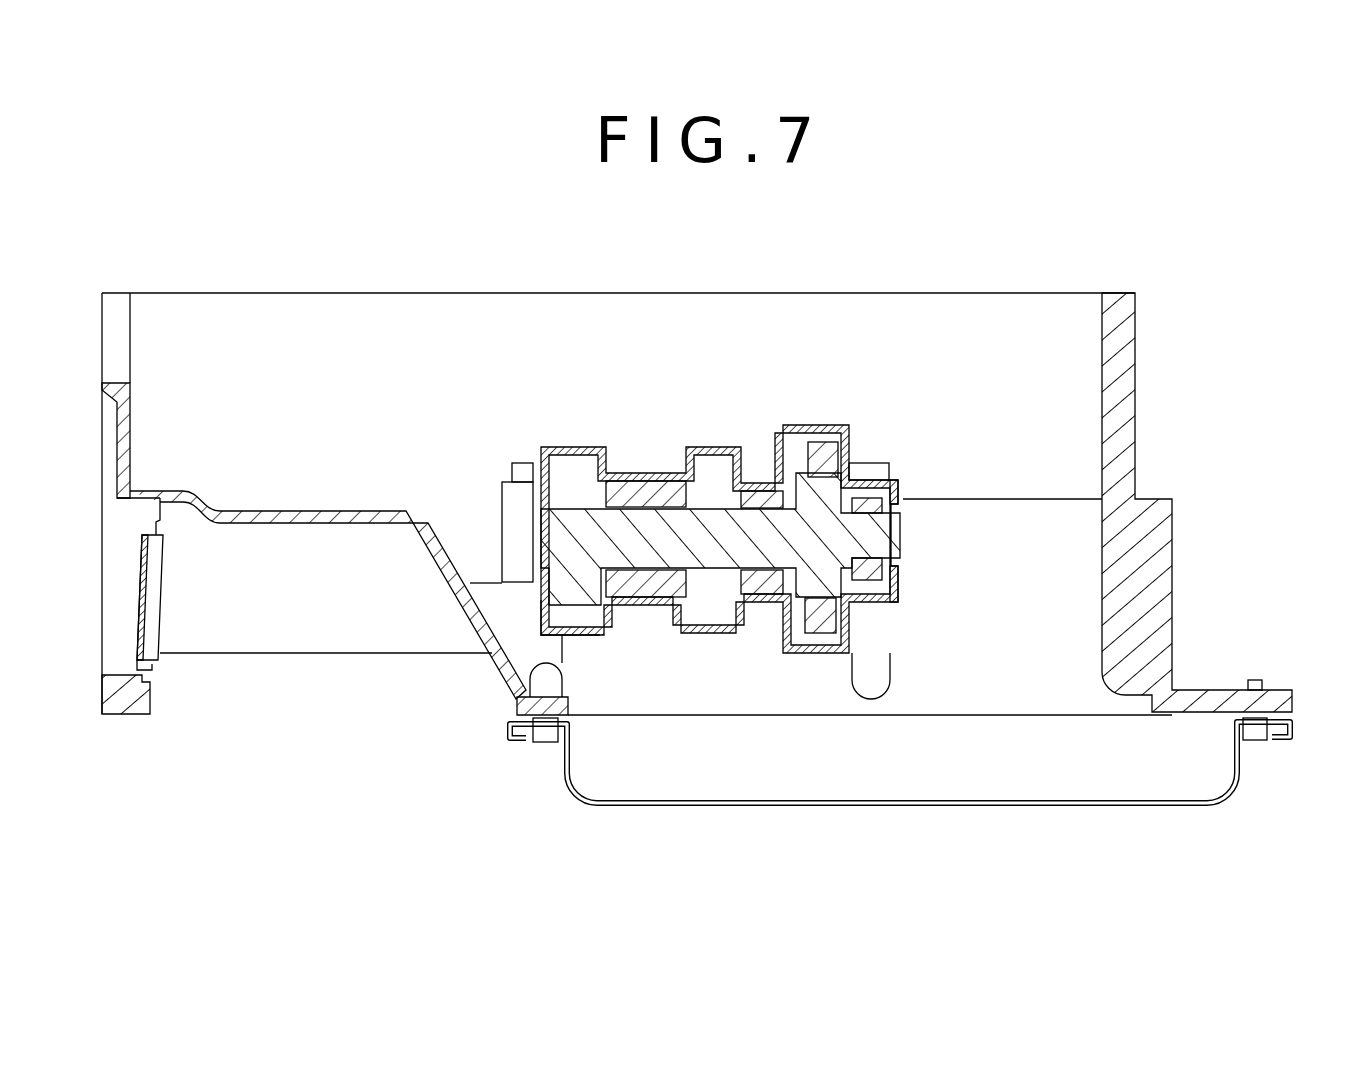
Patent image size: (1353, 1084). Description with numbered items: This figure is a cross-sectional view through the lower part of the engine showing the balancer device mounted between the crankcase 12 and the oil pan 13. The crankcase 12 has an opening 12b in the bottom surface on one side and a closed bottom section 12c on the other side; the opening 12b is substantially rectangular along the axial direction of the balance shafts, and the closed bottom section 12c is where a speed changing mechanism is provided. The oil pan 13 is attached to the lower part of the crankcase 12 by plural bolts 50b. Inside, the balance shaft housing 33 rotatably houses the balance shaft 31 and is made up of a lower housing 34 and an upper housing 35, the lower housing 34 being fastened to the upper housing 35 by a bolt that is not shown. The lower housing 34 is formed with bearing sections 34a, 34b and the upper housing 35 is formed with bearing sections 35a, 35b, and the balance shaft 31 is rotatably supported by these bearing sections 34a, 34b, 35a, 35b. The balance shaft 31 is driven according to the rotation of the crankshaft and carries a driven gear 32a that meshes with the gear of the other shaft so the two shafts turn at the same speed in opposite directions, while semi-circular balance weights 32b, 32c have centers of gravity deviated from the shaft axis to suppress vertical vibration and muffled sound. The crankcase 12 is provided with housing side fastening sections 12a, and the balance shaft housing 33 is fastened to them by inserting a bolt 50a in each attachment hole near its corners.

The crankcase 12 is at (1020, 293).
The housing side fastening section 12a is at (515, 590).
The opening 12b is at (572, 707).
The closed bottom section 12c is at (298, 520).
The oil pan 13 is at (590, 800).
The balance shaft 31 is at (880, 540).
The driven gear 32a is at (825, 442).
The balance weight 32b is at (712, 603).
The balance weight 32c is at (586, 635).
The balance shaft housing 33 is at (784, 515).
The lower housing 34 is at (899, 580).
The bearing section 34a is at (875, 580).
The bearing section 34b is at (652, 598).
The upper housing 35 is at (898, 482).
The bearing section 35a is at (868, 498).
The bearing section 35b is at (655, 481).
The bolt 50a is at (520, 464).
The bolt 50b is at (545, 735).